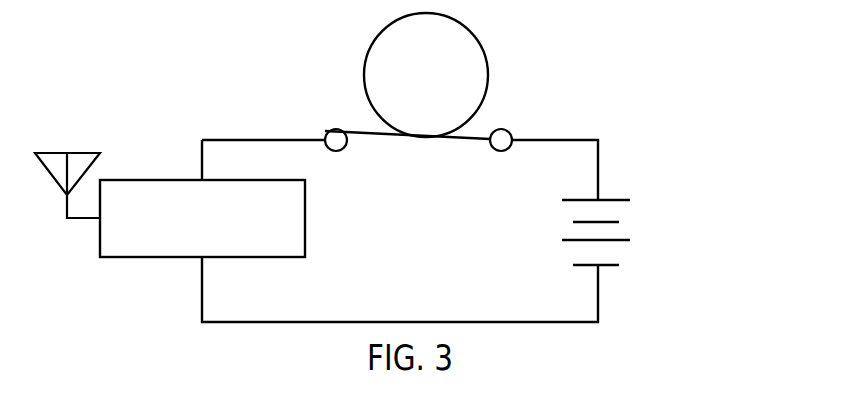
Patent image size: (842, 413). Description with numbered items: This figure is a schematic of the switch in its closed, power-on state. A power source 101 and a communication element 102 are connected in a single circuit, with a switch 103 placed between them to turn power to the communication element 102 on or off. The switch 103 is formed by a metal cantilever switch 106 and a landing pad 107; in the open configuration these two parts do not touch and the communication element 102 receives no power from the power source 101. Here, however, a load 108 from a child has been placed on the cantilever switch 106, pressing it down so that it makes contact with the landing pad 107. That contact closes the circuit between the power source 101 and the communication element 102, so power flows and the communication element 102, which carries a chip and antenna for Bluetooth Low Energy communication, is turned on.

The power source 101 is at (640, 238).
The communication element 102 is at (130, 262).
The switch 103 is at (343, 150).
The cantilever switch 106 is at (427, 138).
The landing pad 107 is at (308, 137).
The load 108 is at (492, 72).